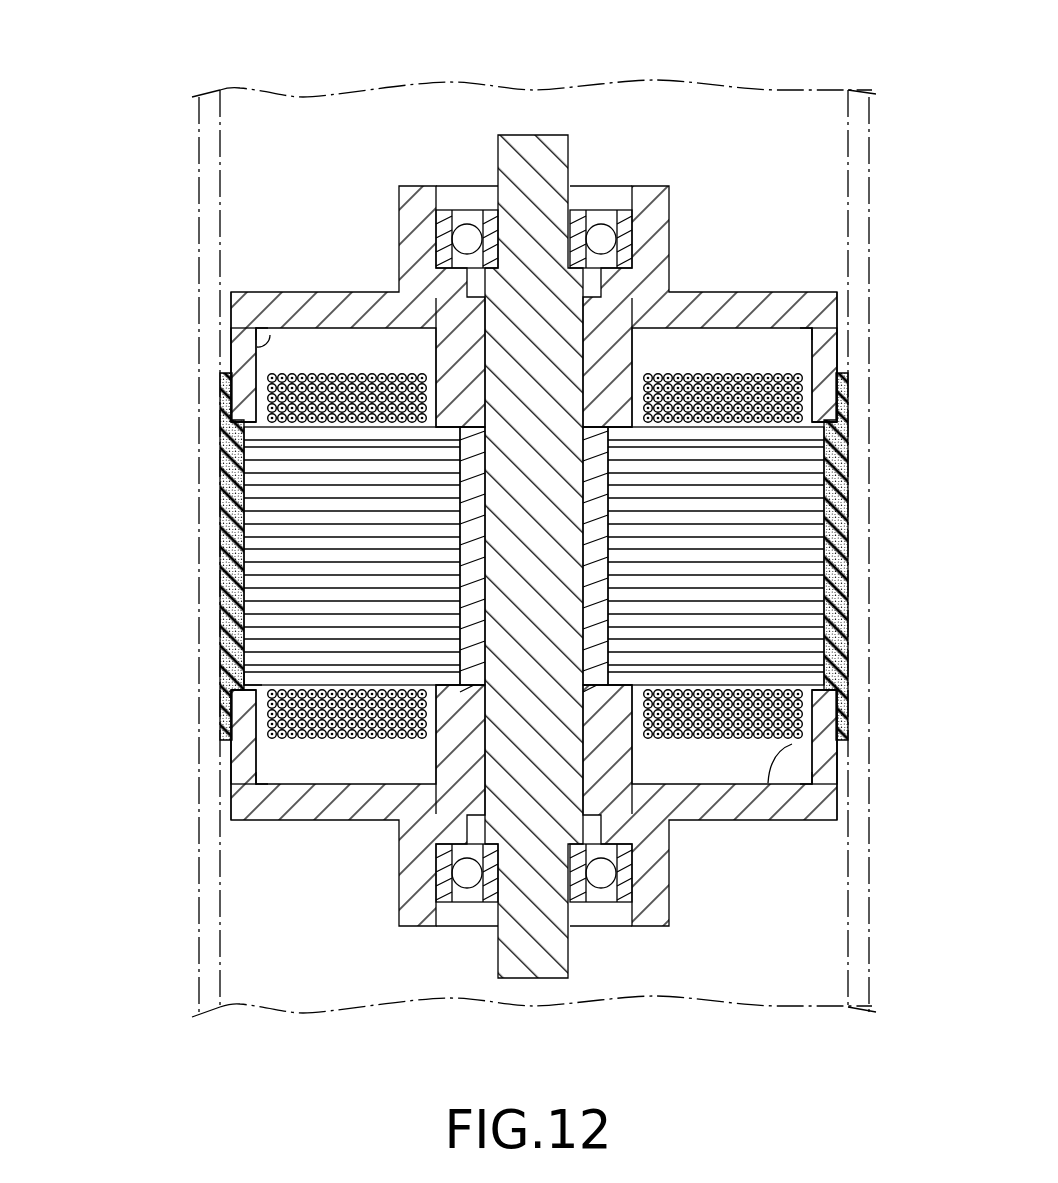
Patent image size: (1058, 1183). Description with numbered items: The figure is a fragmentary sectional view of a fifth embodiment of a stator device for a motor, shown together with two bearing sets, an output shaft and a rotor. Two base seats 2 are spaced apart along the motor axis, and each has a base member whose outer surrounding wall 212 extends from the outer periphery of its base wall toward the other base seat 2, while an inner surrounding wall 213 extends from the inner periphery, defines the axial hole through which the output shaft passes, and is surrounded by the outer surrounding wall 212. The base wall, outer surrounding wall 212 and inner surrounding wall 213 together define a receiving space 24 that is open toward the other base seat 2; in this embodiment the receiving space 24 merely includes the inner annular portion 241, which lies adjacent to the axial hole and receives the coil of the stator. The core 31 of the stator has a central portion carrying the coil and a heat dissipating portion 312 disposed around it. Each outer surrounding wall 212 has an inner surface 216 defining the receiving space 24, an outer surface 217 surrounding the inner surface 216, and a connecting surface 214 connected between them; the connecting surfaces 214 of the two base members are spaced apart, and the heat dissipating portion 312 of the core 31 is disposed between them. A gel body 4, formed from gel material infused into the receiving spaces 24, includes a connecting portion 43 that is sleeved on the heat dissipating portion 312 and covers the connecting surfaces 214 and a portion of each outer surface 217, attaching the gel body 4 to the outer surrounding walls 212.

The base seat 2 is at (544, 541).
The gel body 4 is at (446, 556).
The receiving space 24 is at (297, 340).
The inner annular portion 241 is at (257, 347).
The core 31 is at (255, 492).
The heat dissipating portion 312 is at (250, 682).
The connecting portion 43 is at (223, 528).
The outer surrounding wall 212 is at (828, 395).
The inner surrounding wall 213 is at (622, 354).
The connecting surface 214 is at (823, 422).
The inner surface 216 is at (814, 349).
The outer surface 217 is at (843, 341).